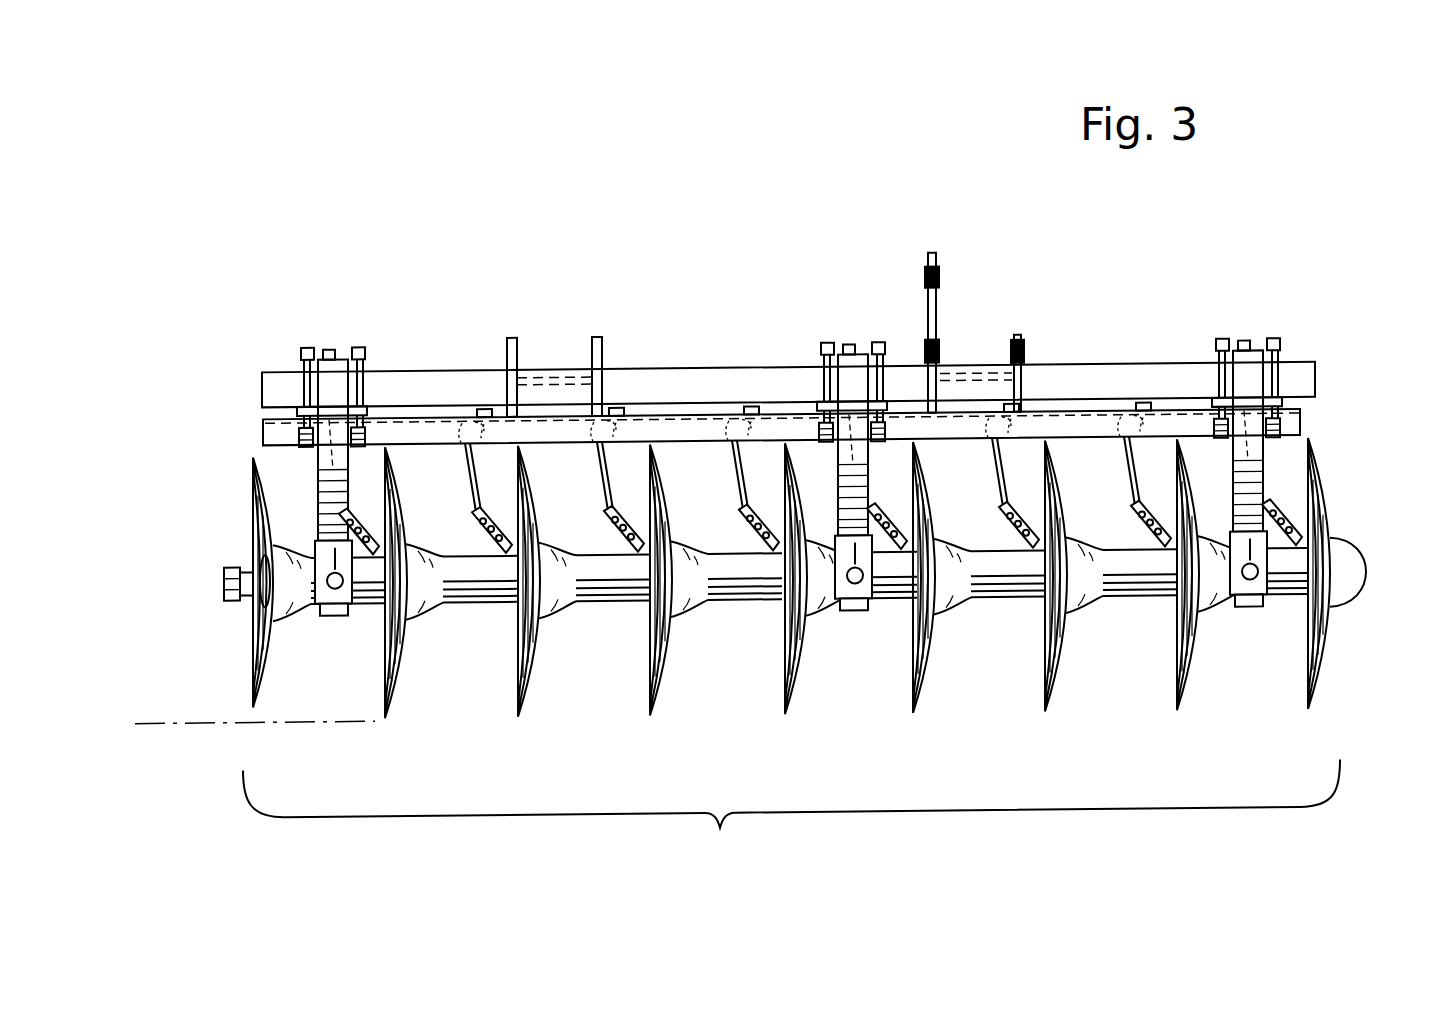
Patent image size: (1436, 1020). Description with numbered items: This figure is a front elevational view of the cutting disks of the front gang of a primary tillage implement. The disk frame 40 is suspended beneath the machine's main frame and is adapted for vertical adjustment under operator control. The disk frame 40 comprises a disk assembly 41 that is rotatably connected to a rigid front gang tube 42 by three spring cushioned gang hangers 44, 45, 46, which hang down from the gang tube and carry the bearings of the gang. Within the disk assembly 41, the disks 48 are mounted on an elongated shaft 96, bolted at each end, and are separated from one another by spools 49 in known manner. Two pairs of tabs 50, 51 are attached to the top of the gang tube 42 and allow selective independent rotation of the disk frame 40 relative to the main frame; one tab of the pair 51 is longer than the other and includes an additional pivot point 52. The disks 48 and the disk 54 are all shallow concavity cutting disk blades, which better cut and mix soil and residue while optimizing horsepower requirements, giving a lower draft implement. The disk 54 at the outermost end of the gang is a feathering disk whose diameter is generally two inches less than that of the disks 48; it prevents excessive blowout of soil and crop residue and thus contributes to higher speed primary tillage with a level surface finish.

The disk frame 40 is at (1152, 322).
The disk assembly 41 is at (791, 820).
The front gang tube 42 is at (432, 386).
The gang hanger 44 is at (322, 467).
The gang hanger 45 is at (858, 470).
The gang hanger 46 is at (1250, 473).
The disks 48 is at (535, 663).
The spools 49 is at (480, 568).
The tabs 50 is at (597, 342).
The tabs 51 is at (1012, 352).
The pivot point 52 is at (940, 283).
The feathering disk 54 is at (266, 643).
The central shaft 96 is at (247, 567).